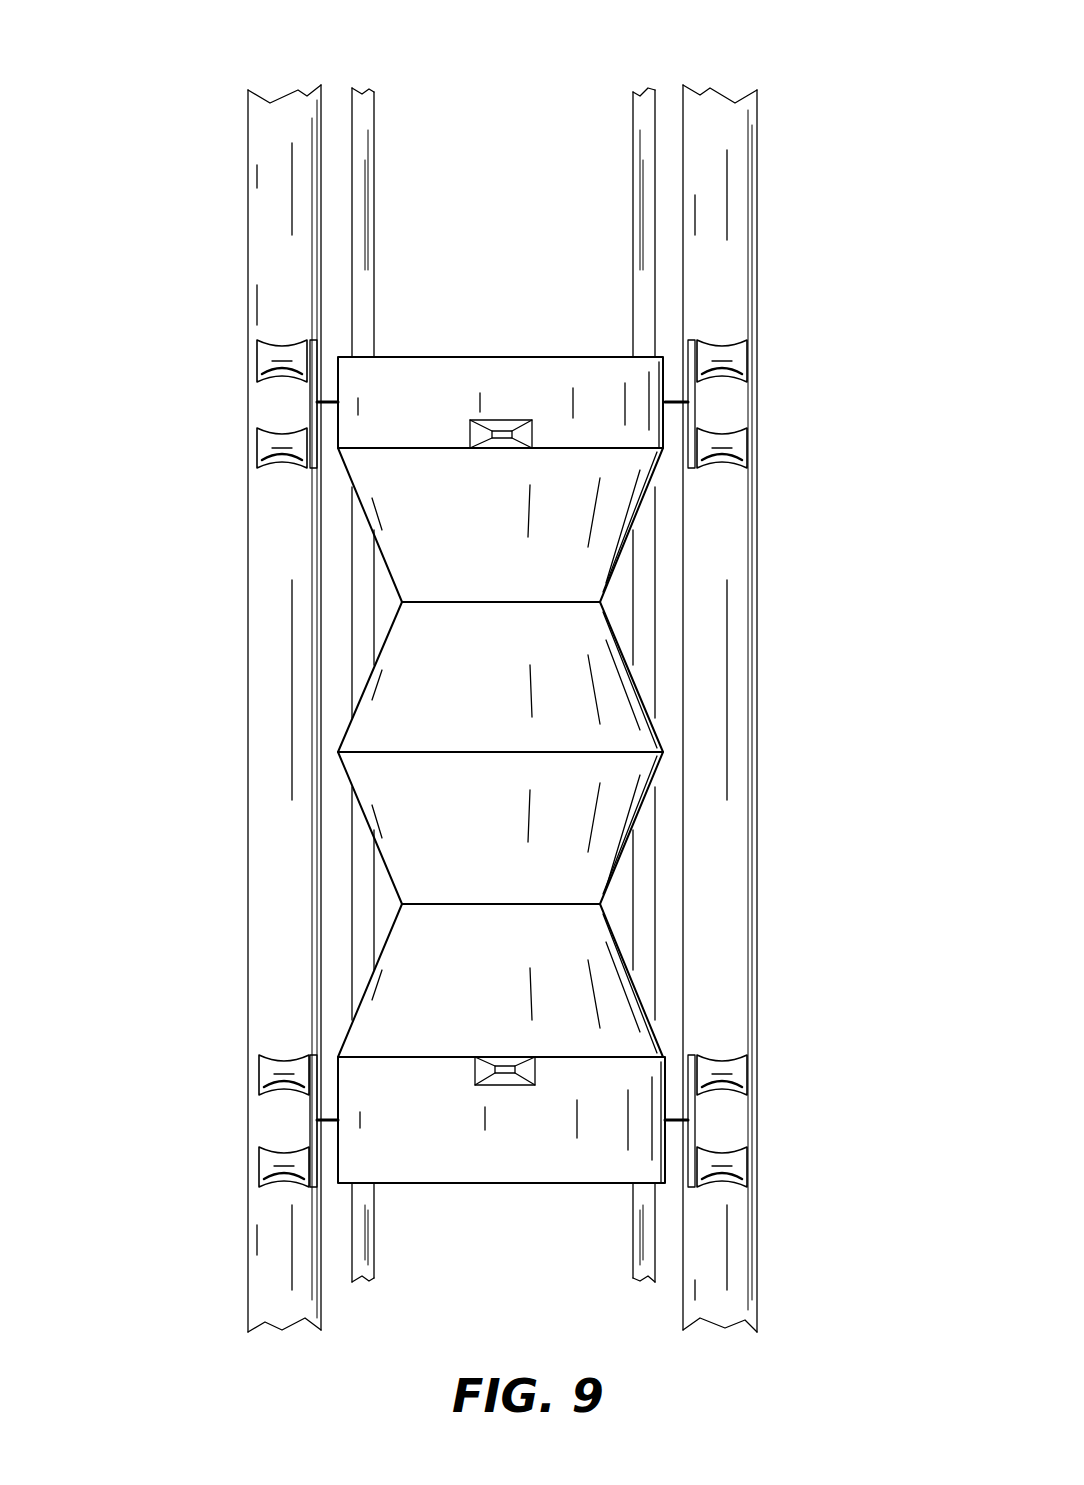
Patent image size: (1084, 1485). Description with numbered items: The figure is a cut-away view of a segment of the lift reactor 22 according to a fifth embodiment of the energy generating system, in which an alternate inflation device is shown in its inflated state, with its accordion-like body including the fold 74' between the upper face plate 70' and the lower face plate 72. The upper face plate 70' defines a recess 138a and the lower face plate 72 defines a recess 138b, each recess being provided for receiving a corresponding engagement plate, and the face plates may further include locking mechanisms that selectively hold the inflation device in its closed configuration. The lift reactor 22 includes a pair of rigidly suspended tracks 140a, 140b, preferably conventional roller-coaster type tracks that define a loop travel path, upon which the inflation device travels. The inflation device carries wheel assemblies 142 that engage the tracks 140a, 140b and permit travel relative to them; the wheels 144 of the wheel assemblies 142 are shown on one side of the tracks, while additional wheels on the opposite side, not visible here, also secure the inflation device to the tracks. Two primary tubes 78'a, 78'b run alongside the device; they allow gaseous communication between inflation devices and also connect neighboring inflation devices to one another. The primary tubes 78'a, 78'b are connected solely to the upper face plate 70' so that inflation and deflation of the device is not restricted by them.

The lift reactor 22 is at (198, 62).
The track 140a is at (248, 172).
The track 140b is at (760, 172).
The primary tube 78'a is at (402, 693).
The primary tube 78'b is at (613, 693).
The upper face plate 70' is at (500, 377).
The face plate 72 is at (490, 1168).
The recess 138a is at (528, 437).
The recess 138b is at (508, 1080).
The bellows fold 74' is at (501, 753).
The wheel assembly 142 is at (258, 401).
The wheel 144 is at (257, 357).